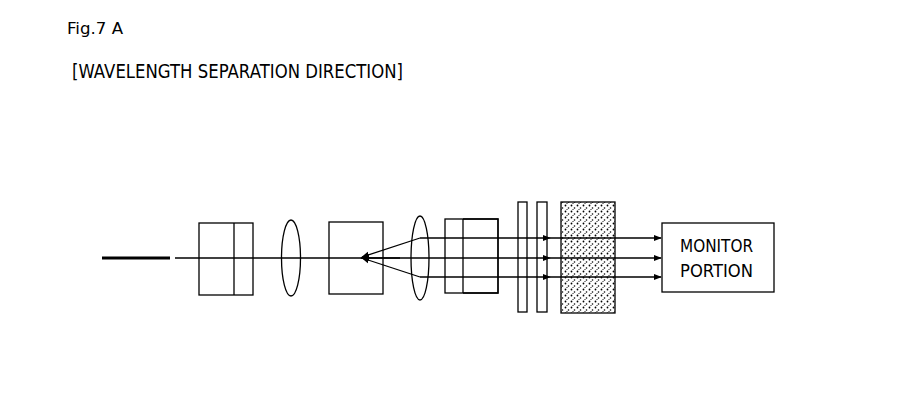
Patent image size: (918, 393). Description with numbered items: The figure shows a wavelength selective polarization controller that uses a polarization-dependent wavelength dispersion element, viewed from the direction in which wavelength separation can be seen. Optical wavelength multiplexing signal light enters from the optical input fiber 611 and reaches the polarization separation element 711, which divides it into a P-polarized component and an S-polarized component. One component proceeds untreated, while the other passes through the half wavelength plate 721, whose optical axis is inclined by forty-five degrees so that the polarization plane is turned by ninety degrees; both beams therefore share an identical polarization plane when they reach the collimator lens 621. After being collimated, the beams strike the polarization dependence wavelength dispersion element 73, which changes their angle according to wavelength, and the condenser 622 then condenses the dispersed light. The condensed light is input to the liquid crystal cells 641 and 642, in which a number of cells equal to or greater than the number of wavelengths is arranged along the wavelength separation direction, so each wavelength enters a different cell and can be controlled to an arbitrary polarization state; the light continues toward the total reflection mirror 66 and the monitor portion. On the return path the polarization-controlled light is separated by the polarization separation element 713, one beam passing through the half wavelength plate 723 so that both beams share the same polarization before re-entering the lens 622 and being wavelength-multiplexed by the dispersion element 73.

The optical input fiber 611 is at (135, 253).
The polarization separation element 711 is at (217, 285).
The half wavelength plate 721 is at (247, 227).
The collimator lens 621 is at (292, 222).
The polarization dependence wavelength dispersion element 73 is at (355, 237).
The condenser 622 is at (420, 220).
The half wavelength plate 723 is at (453, 223).
The polarization separation element 713 is at (488, 225).
The 0°-orientation axis liquid crystal cell 641 is at (524, 309).
The 45°-orientation axis liquid crystal cell 642 is at (543, 309).
The total reflection mirror 66 is at (587, 213).